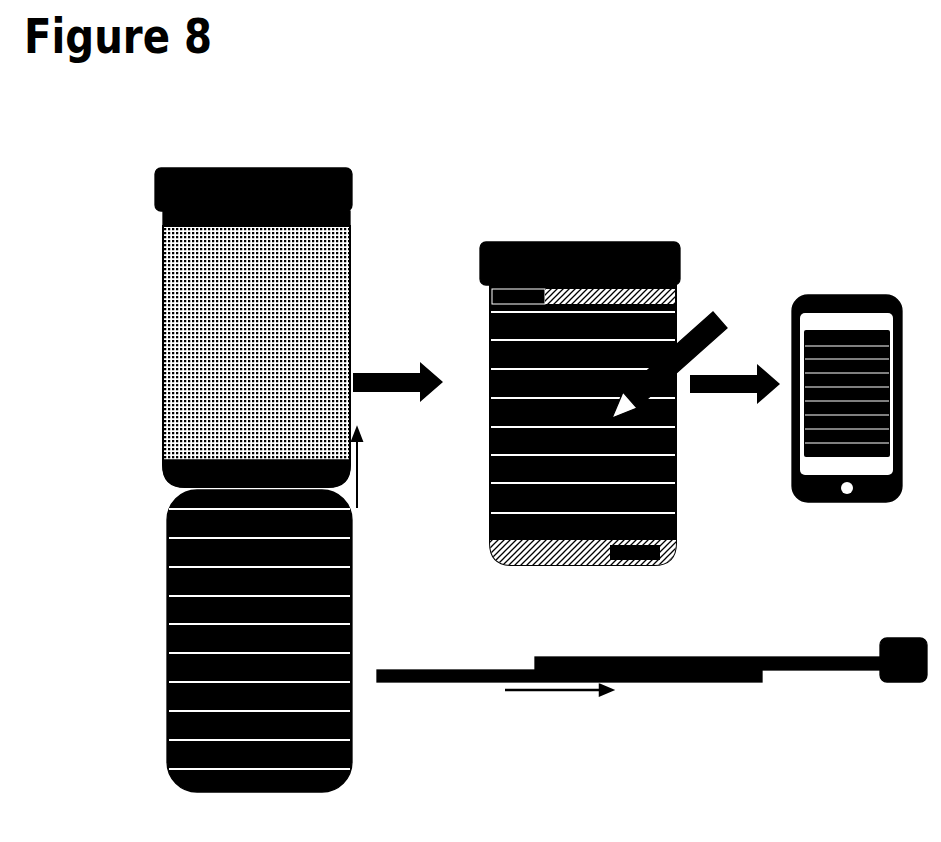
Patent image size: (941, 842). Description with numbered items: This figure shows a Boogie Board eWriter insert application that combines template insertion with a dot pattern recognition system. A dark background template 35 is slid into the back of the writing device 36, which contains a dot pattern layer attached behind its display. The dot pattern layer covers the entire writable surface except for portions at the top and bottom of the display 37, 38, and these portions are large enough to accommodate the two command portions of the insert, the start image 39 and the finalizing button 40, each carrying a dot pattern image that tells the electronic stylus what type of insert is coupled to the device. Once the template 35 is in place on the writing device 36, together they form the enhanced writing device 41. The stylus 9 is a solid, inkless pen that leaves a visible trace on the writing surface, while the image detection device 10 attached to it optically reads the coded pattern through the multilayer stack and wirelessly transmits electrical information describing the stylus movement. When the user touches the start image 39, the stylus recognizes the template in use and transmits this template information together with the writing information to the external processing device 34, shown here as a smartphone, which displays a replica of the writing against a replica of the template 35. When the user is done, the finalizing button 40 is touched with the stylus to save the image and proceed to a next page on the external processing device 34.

The writing device 36 is at (365, 168).
The top portion of the display 37 is at (124, 210).
The bottom portion of the display 38 is at (148, 470).
The dark background template 35 is at (133, 725).
The enhanced writing device 41 is at (680, 228).
The start image 39 is at (458, 293).
The image detection device 10 is at (707, 347).
The stylus 9 is at (640, 408).
The finalizing button 40 is at (662, 548).
The external processing device 34 is at (903, 487).